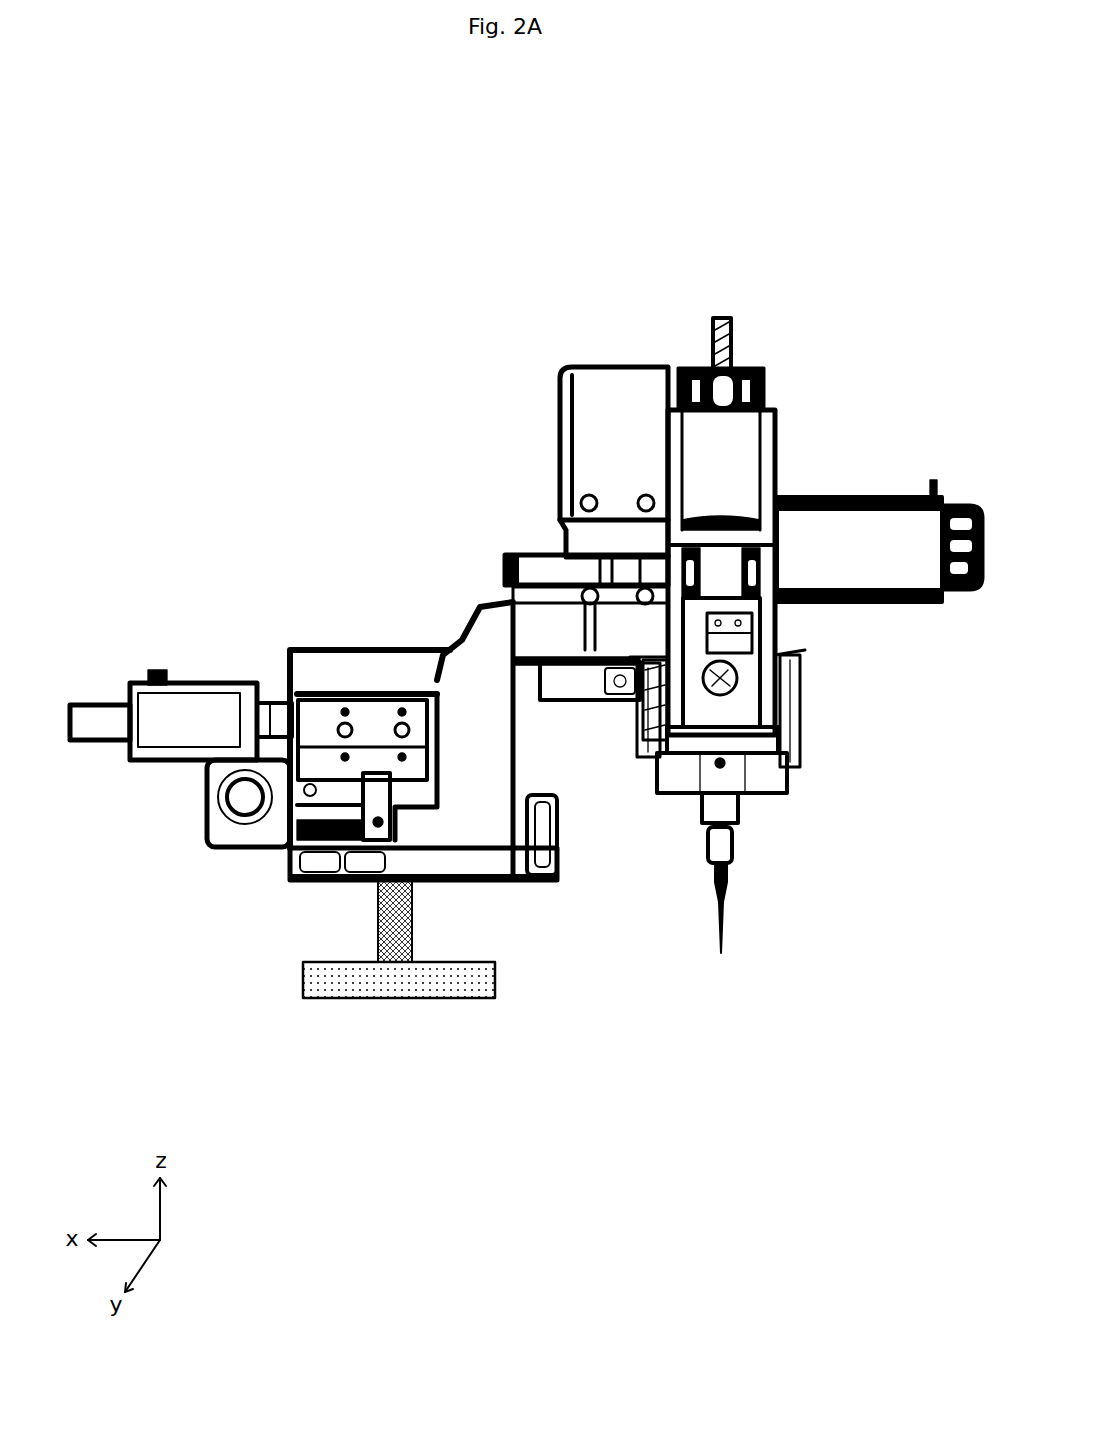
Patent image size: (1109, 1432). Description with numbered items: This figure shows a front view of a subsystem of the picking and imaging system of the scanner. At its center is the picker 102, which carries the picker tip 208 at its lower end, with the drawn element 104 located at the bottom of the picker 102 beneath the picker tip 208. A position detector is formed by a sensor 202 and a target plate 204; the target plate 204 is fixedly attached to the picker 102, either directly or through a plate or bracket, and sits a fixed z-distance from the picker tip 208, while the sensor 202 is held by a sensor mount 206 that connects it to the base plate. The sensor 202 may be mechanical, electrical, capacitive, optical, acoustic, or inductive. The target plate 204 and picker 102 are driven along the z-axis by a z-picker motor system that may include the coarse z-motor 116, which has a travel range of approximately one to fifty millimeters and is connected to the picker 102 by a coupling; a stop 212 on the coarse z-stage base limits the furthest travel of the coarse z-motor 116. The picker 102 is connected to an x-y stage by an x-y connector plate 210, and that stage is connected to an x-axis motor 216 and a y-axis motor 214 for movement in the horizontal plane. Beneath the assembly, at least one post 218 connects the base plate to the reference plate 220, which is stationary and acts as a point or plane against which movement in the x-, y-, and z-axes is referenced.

The picker 102 is at (800, 436).
The needle / tool tip 104 is at (729, 935).
The coarse z-motor 116 is at (903, 605).
The sensor 202 is at (520, 594).
The target plate 204 is at (503, 557).
The sensor mount 206 is at (507, 760).
The picker tip 208 is at (278, 705).
The x-y connector plate 210 is at (347, 648).
The stop 212 is at (557, 413).
The y-axis motor 214 is at (158, 668).
The x-axis motor 216 is at (193, 821).
The post 218 is at (415, 915).
The reference plate 220 is at (497, 980).